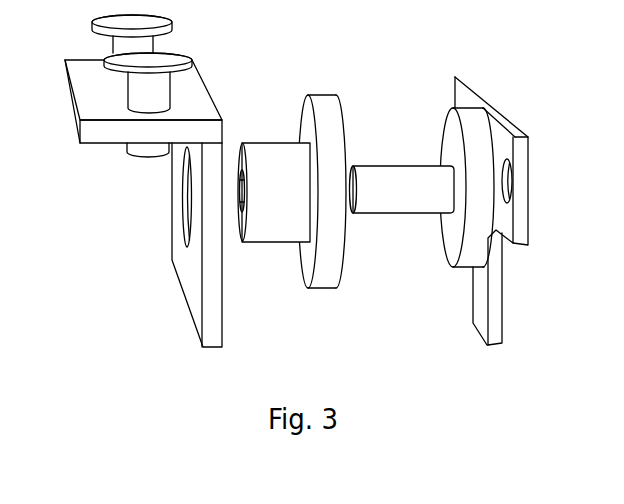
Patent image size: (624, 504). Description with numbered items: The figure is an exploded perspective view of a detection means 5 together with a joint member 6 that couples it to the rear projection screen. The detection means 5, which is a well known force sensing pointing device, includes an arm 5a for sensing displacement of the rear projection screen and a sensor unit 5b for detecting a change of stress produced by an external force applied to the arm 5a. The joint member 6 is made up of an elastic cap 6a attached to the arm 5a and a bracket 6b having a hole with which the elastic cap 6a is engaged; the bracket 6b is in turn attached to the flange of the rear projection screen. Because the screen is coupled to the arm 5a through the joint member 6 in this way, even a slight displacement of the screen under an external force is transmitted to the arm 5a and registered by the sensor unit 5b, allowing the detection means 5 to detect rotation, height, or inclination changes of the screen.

The detection means 5 is at (444, 261).
The arm 5a is at (390, 173).
The sensor unit 5b is at (472, 115).
The joint member 6 is at (74, 134).
The elastic cap 6a is at (270, 148).
The bracket 6b is at (85, 65).